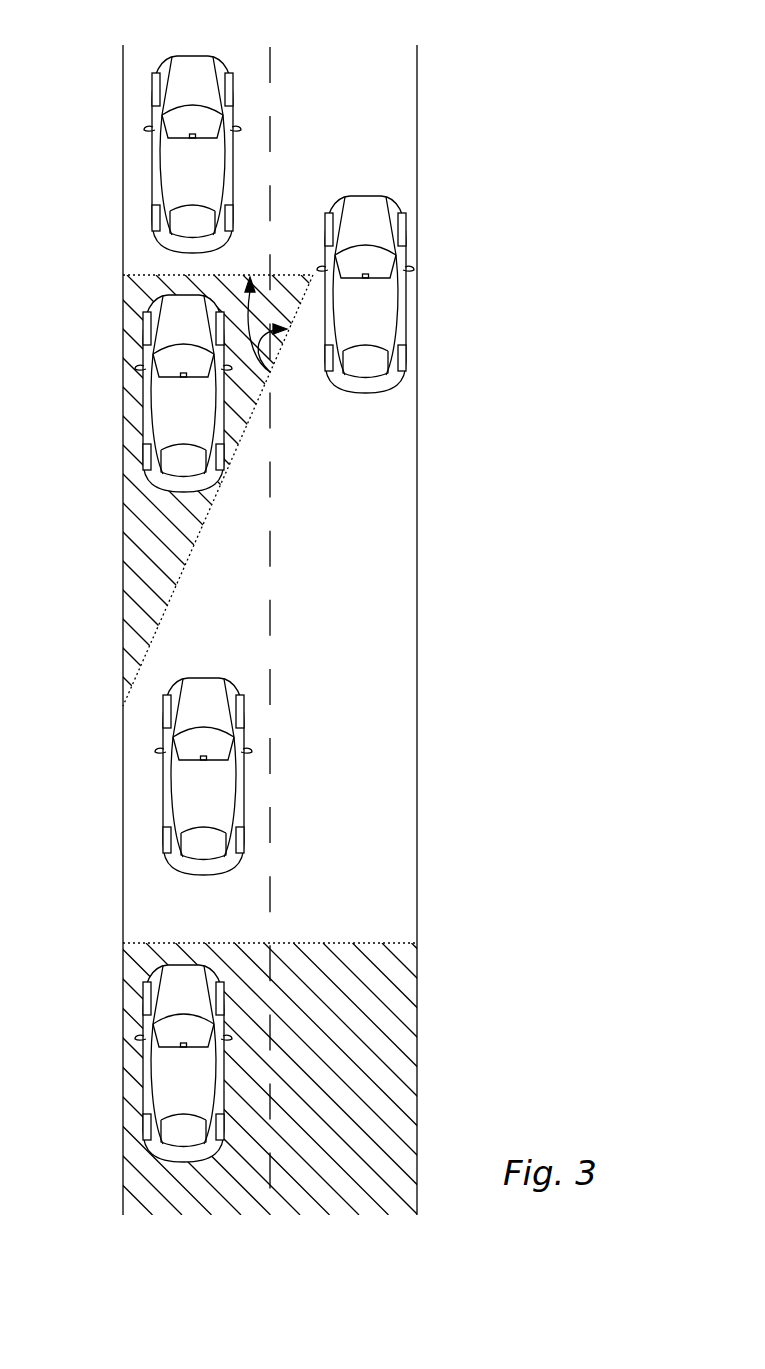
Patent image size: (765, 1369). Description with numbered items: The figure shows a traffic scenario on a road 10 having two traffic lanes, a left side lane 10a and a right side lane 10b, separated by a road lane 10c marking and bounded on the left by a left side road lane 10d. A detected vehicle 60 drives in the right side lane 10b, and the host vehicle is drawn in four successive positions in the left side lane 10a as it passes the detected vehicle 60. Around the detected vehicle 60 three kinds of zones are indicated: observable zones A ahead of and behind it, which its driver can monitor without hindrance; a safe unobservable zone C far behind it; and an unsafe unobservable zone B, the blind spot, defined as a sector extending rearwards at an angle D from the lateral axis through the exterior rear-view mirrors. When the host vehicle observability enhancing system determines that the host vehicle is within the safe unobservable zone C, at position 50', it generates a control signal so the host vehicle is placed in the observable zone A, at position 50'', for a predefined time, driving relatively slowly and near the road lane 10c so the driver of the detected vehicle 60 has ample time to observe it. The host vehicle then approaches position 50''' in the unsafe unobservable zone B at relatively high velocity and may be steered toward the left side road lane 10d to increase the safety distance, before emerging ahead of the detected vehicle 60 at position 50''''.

The road 10 is at (366, 652).
The left side lane 10a is at (366, 765).
The right side lane 10b is at (304, 1243).
The road lane 10c is at (270, 897).
The left side road lane 10d is at (123, 907).
The host vehicle position 50' is at (139, 1063).
The host vehicle position 50'' is at (149, 776).
The host vehicle position 50''' is at (132, 393).
The host vehicle position 50'''' is at (129, 154).
The detected vehicle 60 is at (365, 294).